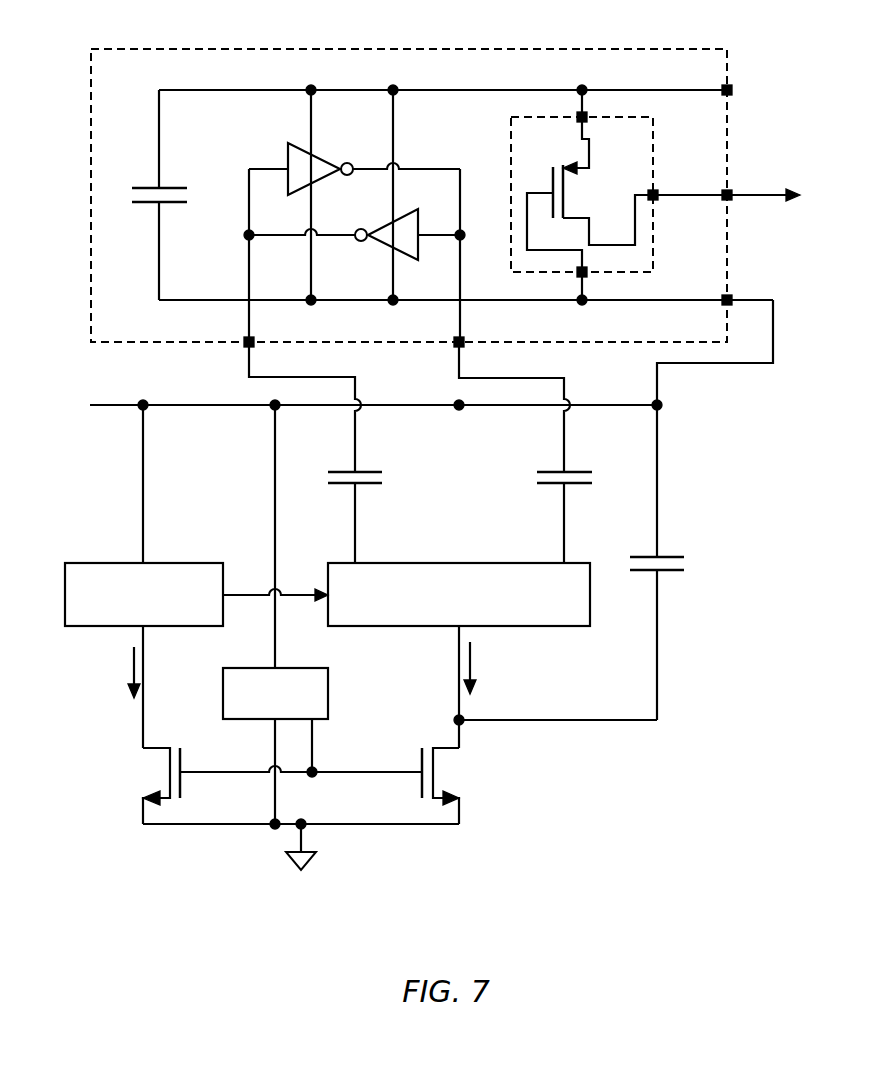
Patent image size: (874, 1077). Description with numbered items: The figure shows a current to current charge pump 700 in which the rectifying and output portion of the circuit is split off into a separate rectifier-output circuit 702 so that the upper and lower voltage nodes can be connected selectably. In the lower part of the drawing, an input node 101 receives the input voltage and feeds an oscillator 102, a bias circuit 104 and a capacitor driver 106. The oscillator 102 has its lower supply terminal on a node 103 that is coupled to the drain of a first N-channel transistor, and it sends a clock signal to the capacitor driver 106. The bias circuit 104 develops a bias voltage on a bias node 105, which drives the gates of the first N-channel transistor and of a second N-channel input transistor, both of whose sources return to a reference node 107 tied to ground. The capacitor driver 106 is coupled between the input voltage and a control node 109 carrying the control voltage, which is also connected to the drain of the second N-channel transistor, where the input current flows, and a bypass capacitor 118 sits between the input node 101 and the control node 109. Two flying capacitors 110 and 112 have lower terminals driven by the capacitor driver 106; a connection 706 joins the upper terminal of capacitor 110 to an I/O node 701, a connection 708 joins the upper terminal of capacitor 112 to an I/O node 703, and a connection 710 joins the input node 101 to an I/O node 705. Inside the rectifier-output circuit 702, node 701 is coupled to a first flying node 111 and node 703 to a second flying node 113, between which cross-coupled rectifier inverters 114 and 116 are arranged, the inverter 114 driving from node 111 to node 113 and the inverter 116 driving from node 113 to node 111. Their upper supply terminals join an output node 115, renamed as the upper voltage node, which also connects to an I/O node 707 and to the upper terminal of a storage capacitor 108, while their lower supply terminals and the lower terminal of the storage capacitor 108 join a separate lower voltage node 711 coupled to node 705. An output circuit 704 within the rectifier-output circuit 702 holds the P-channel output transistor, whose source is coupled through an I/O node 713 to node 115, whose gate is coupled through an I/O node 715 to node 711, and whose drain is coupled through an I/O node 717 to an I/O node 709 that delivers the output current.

The current to current charge pump 700 is at (415, 450).
The rectifier-output circuit 702 is at (280, 47).
The output circuit 704 is at (511, 172).
The output node 115 is at (311, 88).
The I/O node 707 is at (733, 93).
The I/O node 709 is at (733, 191).
The I/O node 705 is at (733, 296).
The I/O node 713 is at (578, 117).
The I/O node 715 is at (578, 272).
The I/O node 717 is at (656, 200).
The rectifier inverter 114 is at (318, 180).
The second flying node 113 is at (460, 248).
The rectifier inverter 116 is at (385, 243).
The first flying node 111 is at (249, 240).
The VLO node 711 is at (312, 302).
The storage capacitor 108 is at (170, 203).
The I/O node 701 is at (246, 344).
The I/O node 703 is at (463, 344).
The connection 706 is at (357, 385).
The connection 708 is at (565, 386).
The connection 710 is at (715, 364).
The input node 101 is at (142, 408).
The oscillator 102 is at (103, 562).
The bias circuit 104 is at (222, 690).
The capacitor driver 106 is at (418, 627).
The control node 109 is at (455, 720).
The flying capacitor 110 is at (368, 485).
The flying capacitor 112 is at (548, 485).
The bypass capacitor 118 is at (680, 571).
The node 103 is at (143, 732).
The bias node 105 is at (314, 775).
The reference node 107 is at (272, 826).